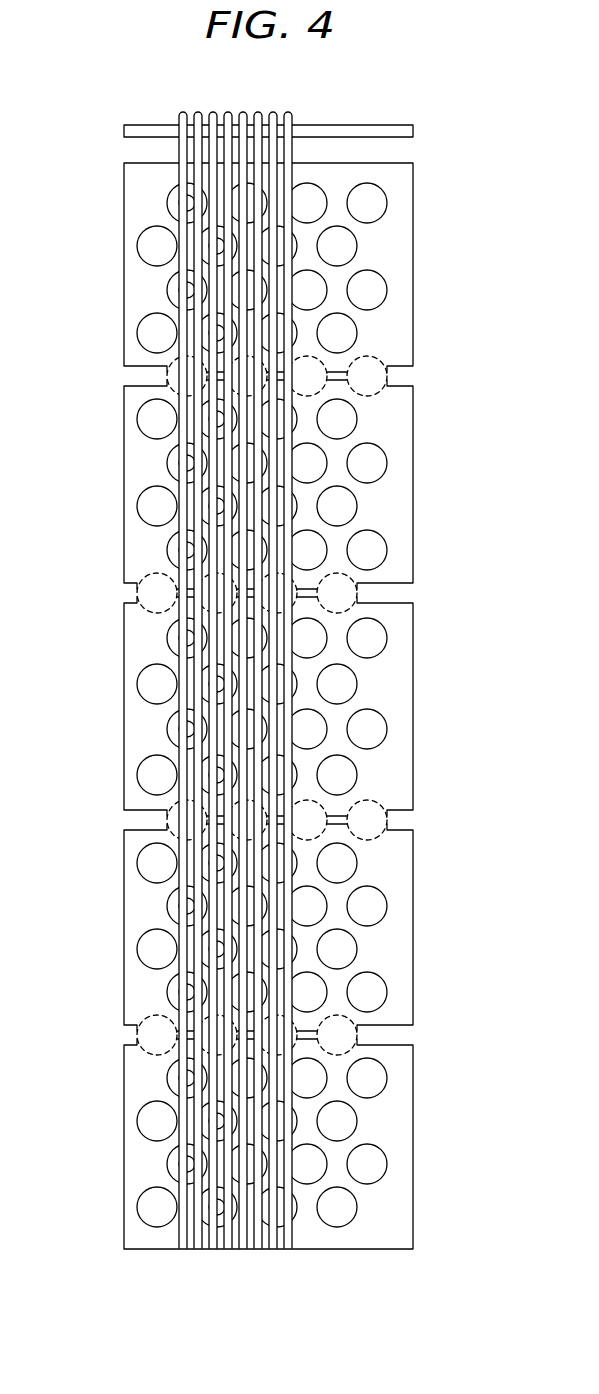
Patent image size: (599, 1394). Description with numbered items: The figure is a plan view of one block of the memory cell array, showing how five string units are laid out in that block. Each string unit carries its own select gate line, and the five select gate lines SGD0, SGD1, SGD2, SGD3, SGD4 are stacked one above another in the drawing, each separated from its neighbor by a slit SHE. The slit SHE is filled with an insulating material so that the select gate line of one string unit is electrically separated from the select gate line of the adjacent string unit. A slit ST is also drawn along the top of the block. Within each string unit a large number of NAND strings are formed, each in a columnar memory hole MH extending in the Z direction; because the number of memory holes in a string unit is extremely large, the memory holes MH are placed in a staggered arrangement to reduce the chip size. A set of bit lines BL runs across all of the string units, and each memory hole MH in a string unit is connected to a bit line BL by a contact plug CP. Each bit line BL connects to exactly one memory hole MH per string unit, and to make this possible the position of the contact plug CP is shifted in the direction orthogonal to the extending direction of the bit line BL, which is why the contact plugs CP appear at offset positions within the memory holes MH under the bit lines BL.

The slit ST is at (150, 148).
The bit line BL is at (293, 118).
The select gate line SGD0 is at (137, 184).
The select gate line SGD1 is at (137, 399).
The select gate line SGD2 is at (137, 625).
The select gate line SGD3 is at (137, 889).
The select gate line SGD4 is at (137, 1062).
The memory hole MH is at (138, 242).
The contact plug CP is at (173, 463).
The slit SHE is at (410, 378).